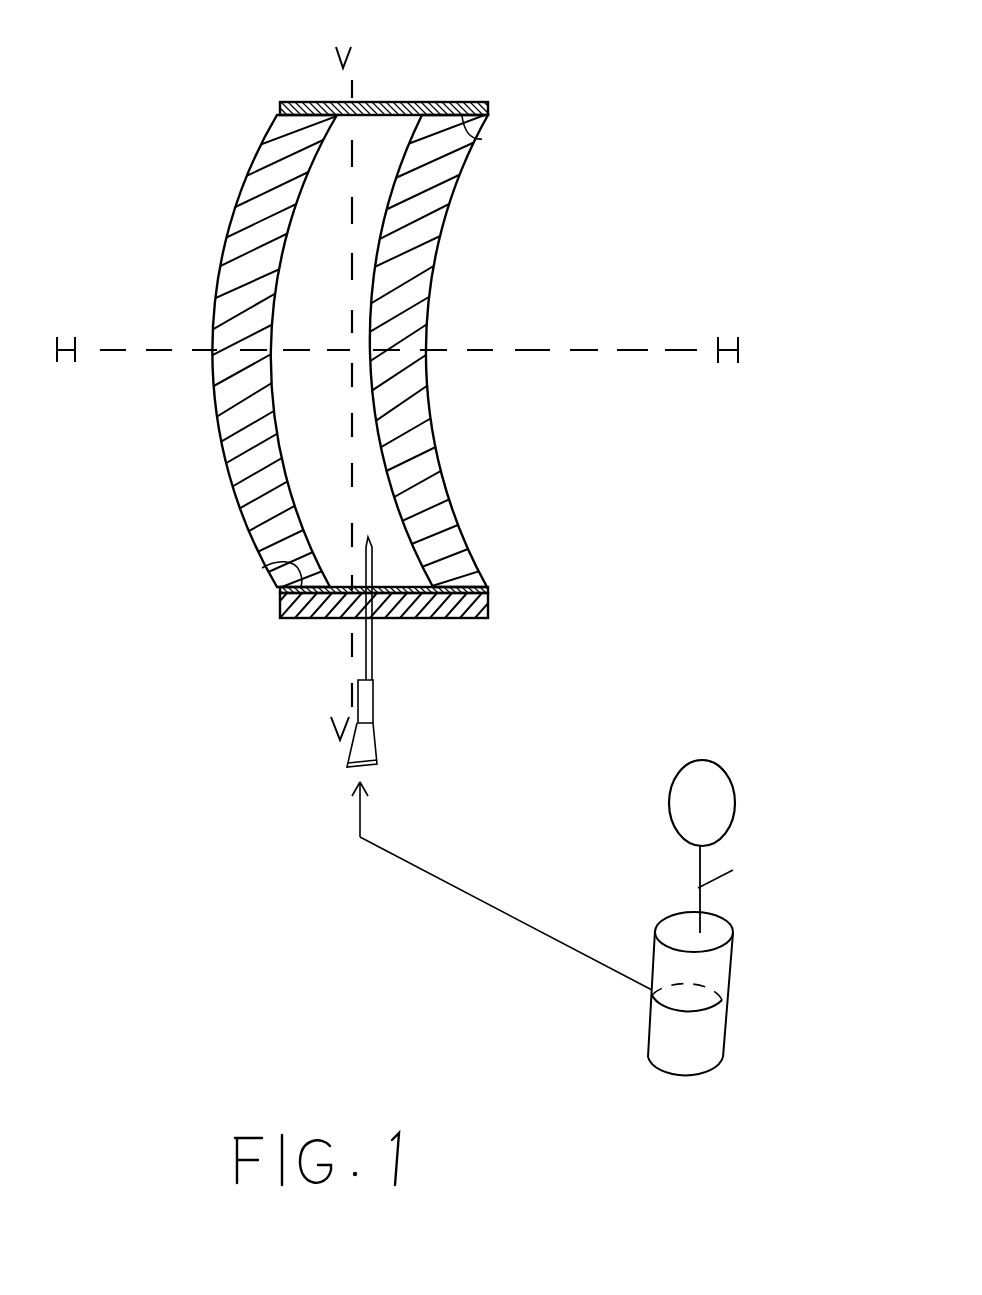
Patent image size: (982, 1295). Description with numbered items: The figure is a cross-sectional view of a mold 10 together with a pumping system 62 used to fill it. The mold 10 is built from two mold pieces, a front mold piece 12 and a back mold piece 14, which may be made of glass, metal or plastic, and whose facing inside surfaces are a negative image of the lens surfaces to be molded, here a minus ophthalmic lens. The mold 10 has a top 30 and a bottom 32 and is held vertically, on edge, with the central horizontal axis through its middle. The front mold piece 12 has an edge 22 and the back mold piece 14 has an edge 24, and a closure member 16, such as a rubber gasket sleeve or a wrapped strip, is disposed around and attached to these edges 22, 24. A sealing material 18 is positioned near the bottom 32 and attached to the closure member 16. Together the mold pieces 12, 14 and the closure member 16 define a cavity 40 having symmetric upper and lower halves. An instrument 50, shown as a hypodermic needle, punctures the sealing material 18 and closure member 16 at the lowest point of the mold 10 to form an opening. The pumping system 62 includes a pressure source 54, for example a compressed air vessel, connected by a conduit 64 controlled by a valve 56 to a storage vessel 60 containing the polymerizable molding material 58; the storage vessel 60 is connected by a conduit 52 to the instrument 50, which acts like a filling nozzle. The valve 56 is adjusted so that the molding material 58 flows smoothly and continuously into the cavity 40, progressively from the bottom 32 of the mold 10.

The mold 10 is at (566, 256).
The front mold piece 12 is at (222, 438).
The back mold piece 14 is at (432, 425).
The closure member 16 is at (490, 105).
The sealing material 18 is at (312, 619).
The edge 22 is at (277, 125).
The edge 24 is at (482, 139).
The top 30 is at (413, 79).
The bottom 32 is at (410, 634).
The cavity 40 is at (318, 422).
The instrument 50 is at (354, 722).
The conduit 52 is at (485, 905).
The pressure source 54 is at (730, 776).
The valve 56 is at (739, 873).
The polymerizable molding material 58 is at (725, 1020).
The storage vessel 60 is at (725, 1048).
The pumping system 62 is at (723, 898).
The conduit 64 is at (699, 862).